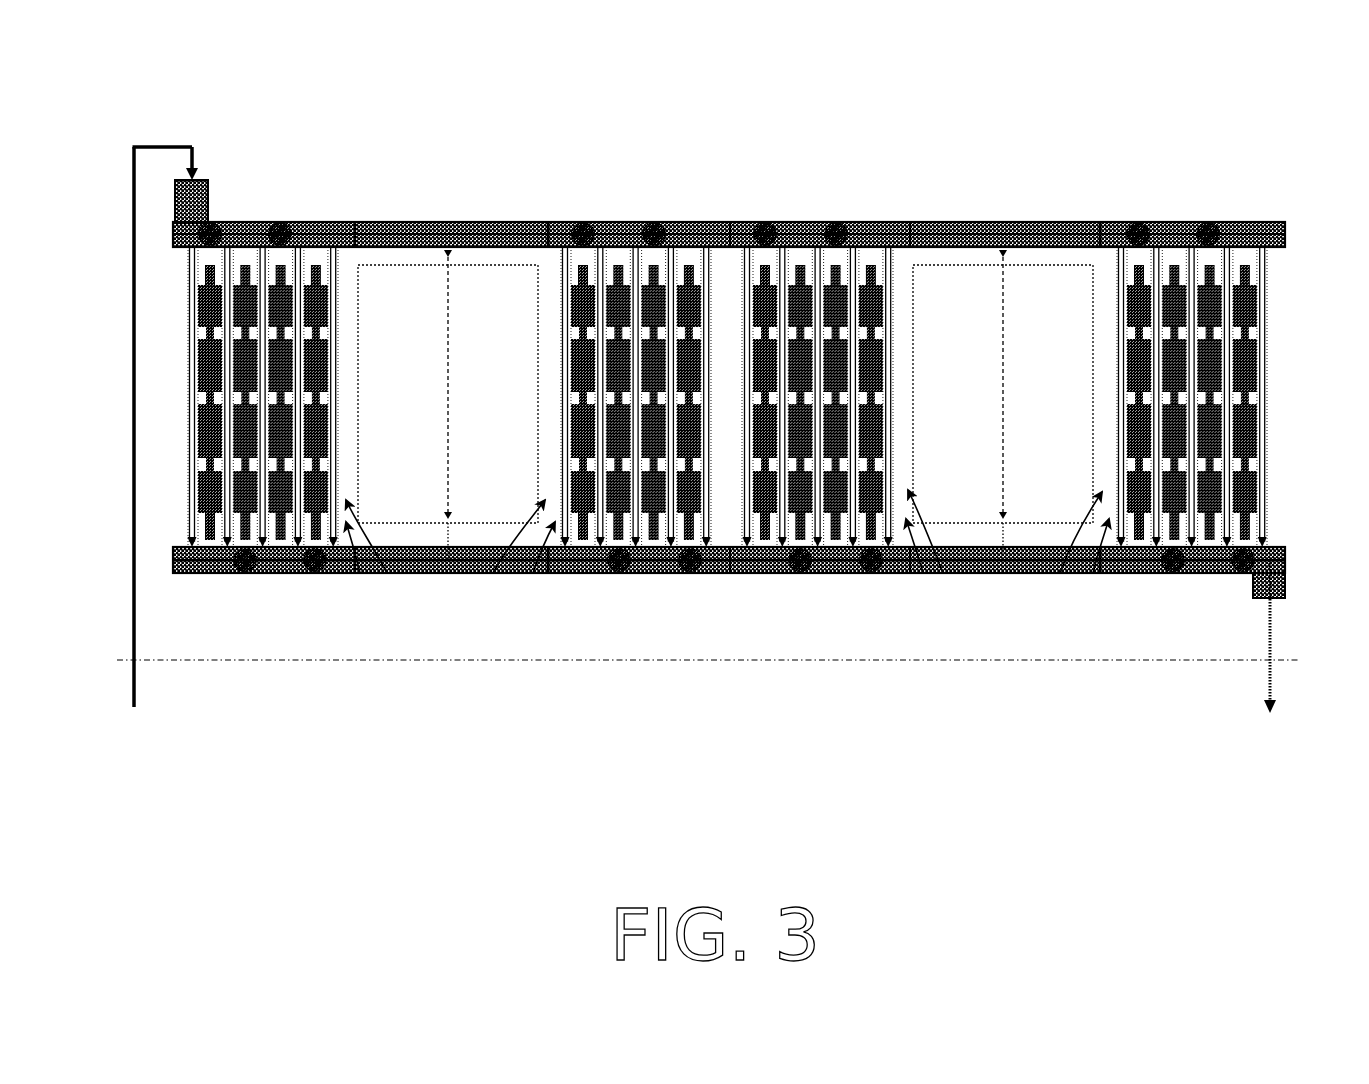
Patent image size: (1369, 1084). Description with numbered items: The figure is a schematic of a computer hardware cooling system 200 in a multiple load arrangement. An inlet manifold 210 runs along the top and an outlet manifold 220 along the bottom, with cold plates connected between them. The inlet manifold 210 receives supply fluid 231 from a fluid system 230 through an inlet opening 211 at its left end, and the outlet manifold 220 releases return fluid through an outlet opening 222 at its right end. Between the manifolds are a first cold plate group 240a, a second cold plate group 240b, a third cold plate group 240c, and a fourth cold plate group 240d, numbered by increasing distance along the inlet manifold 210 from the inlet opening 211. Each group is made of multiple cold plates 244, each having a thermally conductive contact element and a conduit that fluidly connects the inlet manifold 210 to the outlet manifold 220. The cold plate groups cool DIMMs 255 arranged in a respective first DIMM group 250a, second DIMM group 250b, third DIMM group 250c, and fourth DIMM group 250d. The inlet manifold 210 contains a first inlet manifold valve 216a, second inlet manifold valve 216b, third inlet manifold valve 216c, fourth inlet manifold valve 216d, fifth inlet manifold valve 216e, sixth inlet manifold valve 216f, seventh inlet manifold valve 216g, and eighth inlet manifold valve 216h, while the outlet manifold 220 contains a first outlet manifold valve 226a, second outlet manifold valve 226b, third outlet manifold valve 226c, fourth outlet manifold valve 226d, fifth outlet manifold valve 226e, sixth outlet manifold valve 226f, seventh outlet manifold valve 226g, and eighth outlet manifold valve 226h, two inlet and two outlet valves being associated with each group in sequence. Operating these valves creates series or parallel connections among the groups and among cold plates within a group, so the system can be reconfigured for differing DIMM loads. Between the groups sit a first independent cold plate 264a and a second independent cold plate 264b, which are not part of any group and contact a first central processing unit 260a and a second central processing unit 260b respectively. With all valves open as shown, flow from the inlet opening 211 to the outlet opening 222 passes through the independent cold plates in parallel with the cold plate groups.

The system 200 is at (205, 92).
The inlet manifold 210 is at (1285, 222).
The inlet opening 211 is at (208, 193).
The first inlet manifold valve 216a is at (230, 222).
The second inlet manifold valve 216b is at (300, 222).
The third inlet manifold valve 216c is at (575, 222).
The fourth inlet manifold valve 216d is at (638, 223).
The fifth inlet manifold valve 216e is at (787, 223).
The sixth inlet manifold valve 216f is at (855, 223).
The seventh inlet manifold valve 216g is at (1130, 222).
The eighth inlet manifold valve 216h is at (1210, 222).
The outlet manifold 220 is at (1278, 573).
The outlet opening 222 is at (1299, 644).
The first outlet manifold valve 226a is at (253, 573).
The second outlet manifold valve 226b is at (323, 573).
The third outlet manifold valve 226c is at (619, 573).
The fourth outlet manifold valve 226d is at (690, 573).
The fifth outlet manifold valve 226e is at (800, 573).
The sixth outlet manifold valve 226f is at (871, 573).
The seventh outlet manifold valve 226g is at (1173, 573).
The eighth outlet manifold valve 226h is at (1243, 573).
The fluid system 230 is at (163, 657).
The supply fluid 231 is at (135, 677).
The first cold plate group 240a is at (387, 573).
The second cold plate group 240b is at (493, 573).
The third cold plate group 240c is at (943, 573).
The fourth cold plate group 240d is at (1060, 573).
The cold plate 244 is at (190, 480).
The first DIMM group 250a is at (360, 573).
The second DIMM group 250b is at (533, 573).
The third DIMM group 250c is at (923, 573).
The fourth DIMM group 250d is at (1093, 573).
The DIMM 255 is at (208, 395).
The first central processing unit 260a is at (493, 265).
The second central processing unit 260b is at (1047, 265).
The first independent cold plate 264a is at (448, 405).
The second independent cold plate 264b is at (1003, 405).